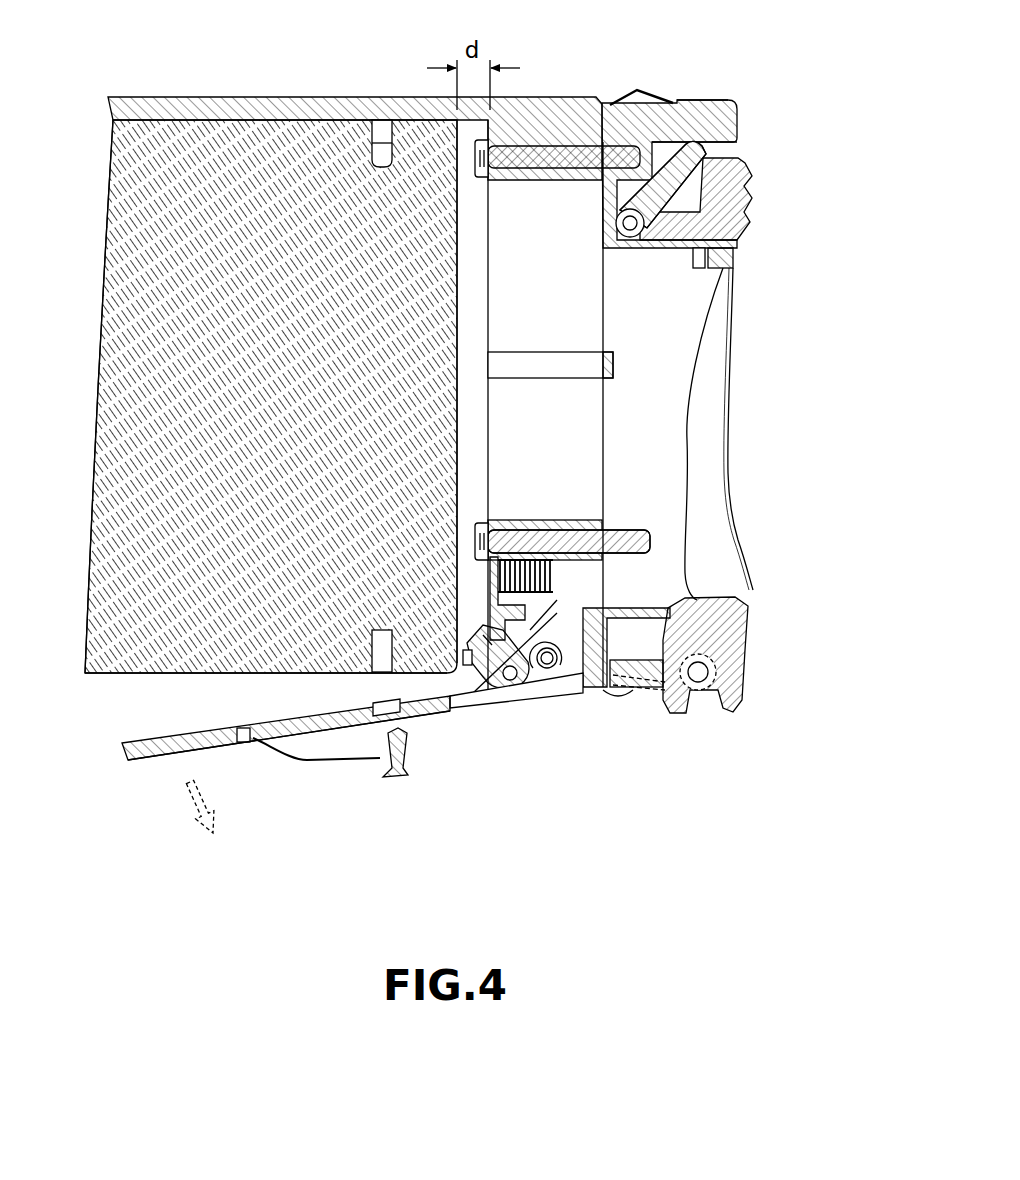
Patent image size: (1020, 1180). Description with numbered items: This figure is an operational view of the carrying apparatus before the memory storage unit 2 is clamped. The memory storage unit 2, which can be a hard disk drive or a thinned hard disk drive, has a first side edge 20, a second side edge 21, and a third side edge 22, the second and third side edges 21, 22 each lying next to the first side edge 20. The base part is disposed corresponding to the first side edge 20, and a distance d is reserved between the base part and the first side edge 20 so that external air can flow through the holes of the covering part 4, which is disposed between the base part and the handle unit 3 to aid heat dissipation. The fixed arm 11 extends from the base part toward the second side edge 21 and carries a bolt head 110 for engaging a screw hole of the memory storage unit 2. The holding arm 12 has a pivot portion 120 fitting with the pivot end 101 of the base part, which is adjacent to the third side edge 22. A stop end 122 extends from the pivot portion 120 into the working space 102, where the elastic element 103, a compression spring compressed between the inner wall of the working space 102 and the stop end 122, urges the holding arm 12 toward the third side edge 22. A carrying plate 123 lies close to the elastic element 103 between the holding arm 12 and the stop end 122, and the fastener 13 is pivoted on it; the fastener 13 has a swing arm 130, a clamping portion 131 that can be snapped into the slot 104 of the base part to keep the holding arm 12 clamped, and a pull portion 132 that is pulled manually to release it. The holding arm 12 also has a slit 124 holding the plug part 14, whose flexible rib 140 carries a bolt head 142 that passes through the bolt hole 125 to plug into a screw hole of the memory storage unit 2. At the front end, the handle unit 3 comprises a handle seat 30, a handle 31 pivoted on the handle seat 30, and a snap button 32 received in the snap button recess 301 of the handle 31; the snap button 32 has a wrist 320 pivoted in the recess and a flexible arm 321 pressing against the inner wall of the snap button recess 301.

The memory storage unit 2 is at (255, 187).
The fixed arm 11 is at (170, 97).
The bolt head 110 is at (408, 97).
The first side edge 20 is at (460, 257).
The second side edge 21 is at (197, 120).
The third side edge 22 is at (107, 677).
The wrist 320 is at (611, 103).
The covering part 4 is at (652, 97).
The flexible arm 321 is at (694, 100).
The pivot end 101 is at (722, 148).
The snap button recess 301 is at (698, 180).
The snap button 32 is at (743, 195).
The handle seat 30 is at (643, 312).
The handle unit 3 is at (762, 424).
The handle 31 is at (735, 468).
The working space 102 is at (590, 580).
The stop end 122 is at (590, 593).
The elastic element 103 is at (560, 590).
The slot 104 is at (550, 633).
The holding arm 12 is at (150, 752).
The pivot portion 120 is at (583, 675).
The carrying plate 123 is at (612, 690).
The slit 124 is at (345, 735).
The bolt hole 125 is at (373, 706).
The fastener 13 is at (487, 677).
The swing arm 130 is at (542, 670).
The clamping portion 131 is at (473, 650).
The pull portion 132 is at (447, 673).
The plug part 14 is at (295, 797).
The flexible rib 140 is at (303, 760).
The bolt head 142 is at (403, 745).